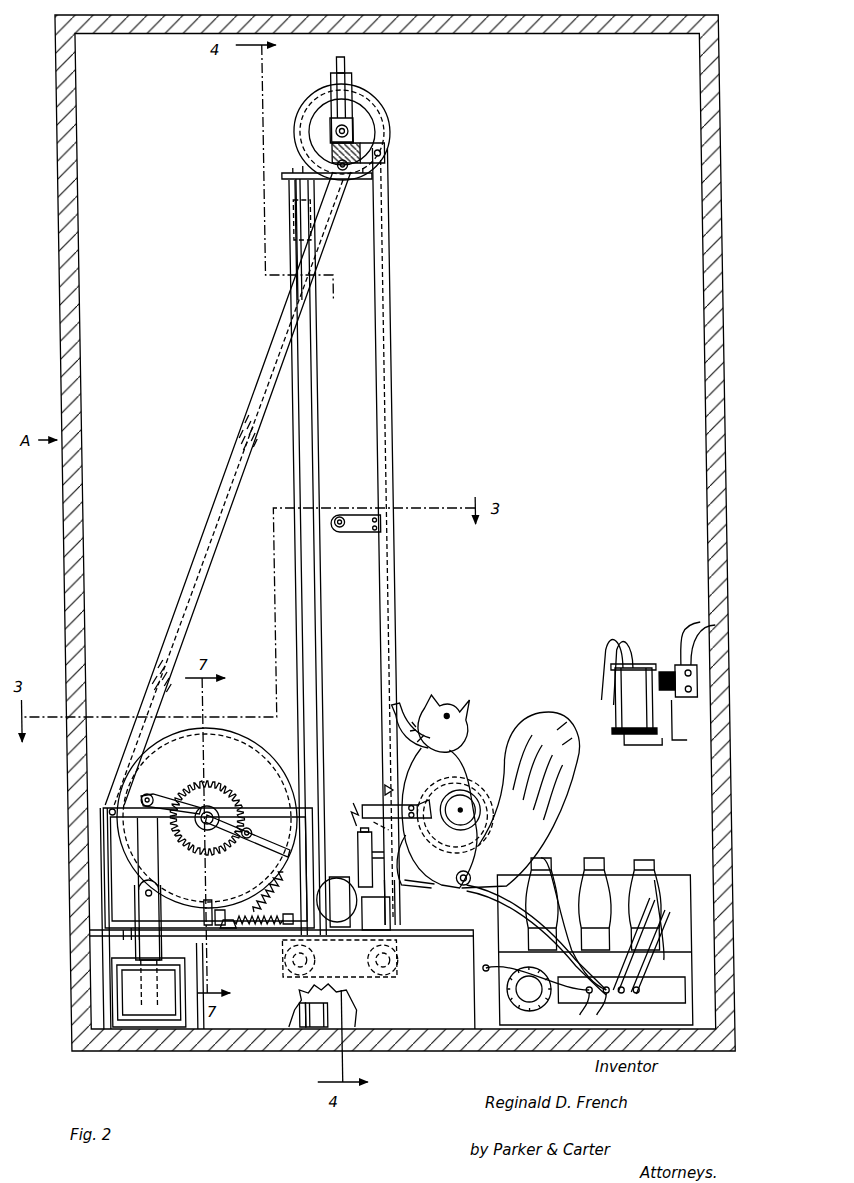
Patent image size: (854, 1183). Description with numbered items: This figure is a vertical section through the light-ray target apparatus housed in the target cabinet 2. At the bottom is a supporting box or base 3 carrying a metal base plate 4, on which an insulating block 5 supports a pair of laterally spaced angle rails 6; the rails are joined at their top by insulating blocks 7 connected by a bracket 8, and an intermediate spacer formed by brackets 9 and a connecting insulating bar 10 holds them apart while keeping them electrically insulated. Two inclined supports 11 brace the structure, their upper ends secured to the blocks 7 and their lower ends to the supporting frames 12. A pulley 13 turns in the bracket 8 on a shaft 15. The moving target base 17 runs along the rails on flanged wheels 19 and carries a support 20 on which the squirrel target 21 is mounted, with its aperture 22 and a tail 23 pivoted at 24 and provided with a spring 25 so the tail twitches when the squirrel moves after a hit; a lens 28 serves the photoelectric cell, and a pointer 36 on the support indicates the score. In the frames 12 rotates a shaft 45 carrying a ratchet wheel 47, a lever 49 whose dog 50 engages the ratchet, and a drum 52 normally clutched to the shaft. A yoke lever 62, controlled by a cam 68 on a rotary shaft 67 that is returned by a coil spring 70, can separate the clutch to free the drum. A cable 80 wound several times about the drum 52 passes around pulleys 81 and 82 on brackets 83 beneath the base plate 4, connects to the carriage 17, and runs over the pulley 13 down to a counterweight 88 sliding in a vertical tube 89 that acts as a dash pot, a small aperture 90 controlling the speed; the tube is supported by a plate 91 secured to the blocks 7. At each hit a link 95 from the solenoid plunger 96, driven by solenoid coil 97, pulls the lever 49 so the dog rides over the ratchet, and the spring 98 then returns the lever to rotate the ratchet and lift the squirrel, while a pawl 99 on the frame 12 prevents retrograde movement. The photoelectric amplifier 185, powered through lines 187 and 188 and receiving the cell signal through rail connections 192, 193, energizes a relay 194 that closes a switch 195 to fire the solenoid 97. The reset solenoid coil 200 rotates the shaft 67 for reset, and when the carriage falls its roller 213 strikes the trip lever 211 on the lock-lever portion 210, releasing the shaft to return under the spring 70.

The target cabinet 2 is at (54, 365).
The supporting box or base 3 is at (418, 1030).
The base plate 4 is at (94, 933).
The insulating block 5 is at (376, 918).
The rails 6 is at (385, 600).
The insulating blocks 7 is at (360, 152).
The bracket 8 is at (351, 80).
The brackets 9 is at (347, 532).
The connecting insulating bar 10 is at (331, 518).
The inclined supports 11 is at (217, 480).
The supporting frames 12 is at (89, 845).
The pulley 13 is at (383, 120).
The shaft 15 is at (343, 130).
The moving target base 17 is at (349, 812).
The wheels 19 is at (372, 785).
The bracket or support 20 is at (392, 805).
The target member 21 is at (443, 722).
The aperture 22 is at (450, 795).
The tail 23 is at (517, 782).
The pivot 24 is at (451, 882).
The spring 25 is at (497, 815).
The lens 28 is at (452, 808).
The pointer 36 is at (347, 805).
The shaft 45 is at (199, 813).
The ratchet wheel 47 is at (199, 790).
The lever 49 is at (254, 845).
The dog 50 is at (233, 838).
The pulley or drum 52 is at (243, 752).
The lever 62 is at (189, 912).
The rotary shaft 67 is at (225, 928).
The terminal cam 68 is at (200, 922).
The coil spring 70 is at (247, 925).
The cable 80 is at (282, 608).
The pulley 81 is at (279, 970).
The pulley 82 is at (364, 977).
The brackets 83 is at (299, 946).
The counterweight 88 is at (290, 216).
The vertical tube 89 is at (311, 410).
The small aperture 90 is at (283, 1030).
The plate 91 is at (279, 176).
The link 95 is at (134, 862).
The solenoid plunger 96 is at (125, 895).
The solenoid coil 97 is at (104, 985).
The spring 98 is at (247, 900).
The pawl 99 is at (140, 800).
The photoelectric amplifier 185 is at (608, 870).
The line 187 is at (645, 880).
The line 188 is at (653, 930).
The electrical connection 192 is at (455, 930).
The electrical connection 193 is at (467, 968).
The relay 194 is at (604, 717).
The switch 195 is at (660, 725).
The reset solenoid coil 200 is at (334, 865).
The lock lever portion 210 is at (361, 852).
The trip lever 211 is at (344, 840).
The roller 213 is at (366, 825).